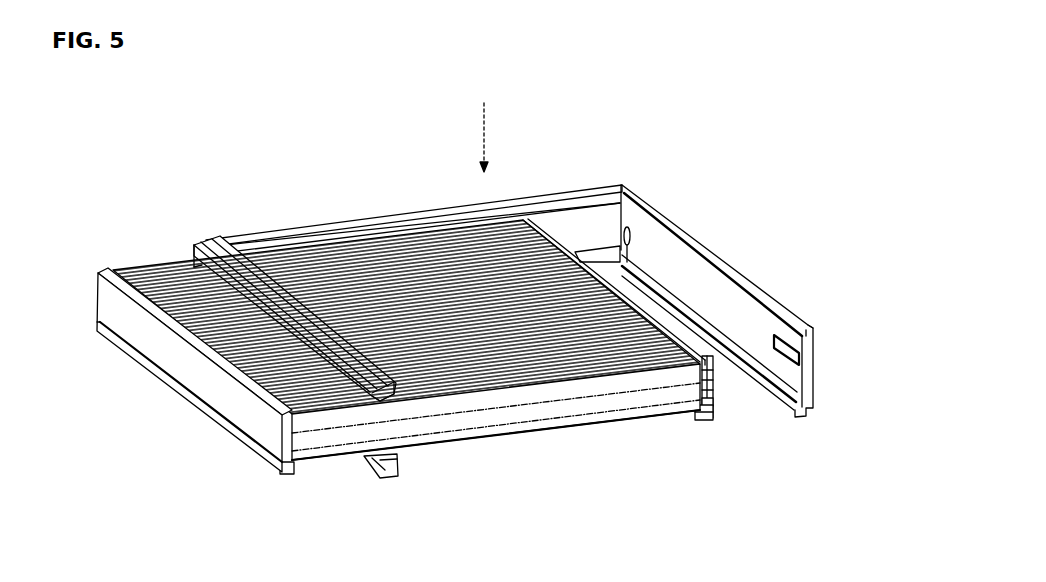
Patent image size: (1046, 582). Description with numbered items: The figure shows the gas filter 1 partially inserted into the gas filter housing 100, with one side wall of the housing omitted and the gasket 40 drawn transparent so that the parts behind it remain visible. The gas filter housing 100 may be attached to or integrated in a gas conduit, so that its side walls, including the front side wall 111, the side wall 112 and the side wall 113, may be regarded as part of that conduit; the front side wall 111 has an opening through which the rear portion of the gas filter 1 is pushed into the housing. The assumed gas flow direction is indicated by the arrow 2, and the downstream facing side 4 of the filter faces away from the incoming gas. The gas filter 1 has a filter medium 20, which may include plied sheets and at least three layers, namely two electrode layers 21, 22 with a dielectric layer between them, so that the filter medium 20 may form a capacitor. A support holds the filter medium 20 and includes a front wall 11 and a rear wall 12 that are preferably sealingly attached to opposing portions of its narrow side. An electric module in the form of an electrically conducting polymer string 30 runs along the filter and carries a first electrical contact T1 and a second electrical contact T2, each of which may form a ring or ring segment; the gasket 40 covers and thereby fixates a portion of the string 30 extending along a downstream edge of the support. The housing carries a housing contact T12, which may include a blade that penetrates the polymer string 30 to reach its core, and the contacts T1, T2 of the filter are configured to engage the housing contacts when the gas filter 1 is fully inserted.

The gas filter 1 is at (385, 327).
The arrow 2 is at (490, 137).
The downstream facing side 4 is at (480, 440).
The front wall 11 is at (182, 363).
The rear wall 12 is at (712, 398).
The filter medium 20 is at (432, 433).
The electrode layer 21 is at (613, 402).
The electrode layer 22 is at (538, 364).
The electrically conducting polymer string 30 is at (712, 413).
The gasket 40 is at (258, 458).
The gas filter housing 100 is at (517, 328).
The front side wall 111 is at (390, 469).
The side wall 112 is at (590, 230).
The side wall 113 is at (808, 347).
The first electrical contact T1 is at (631, 236).
The second electrical contact T2 is at (712, 386).
The second housing contact T12 is at (803, 361).